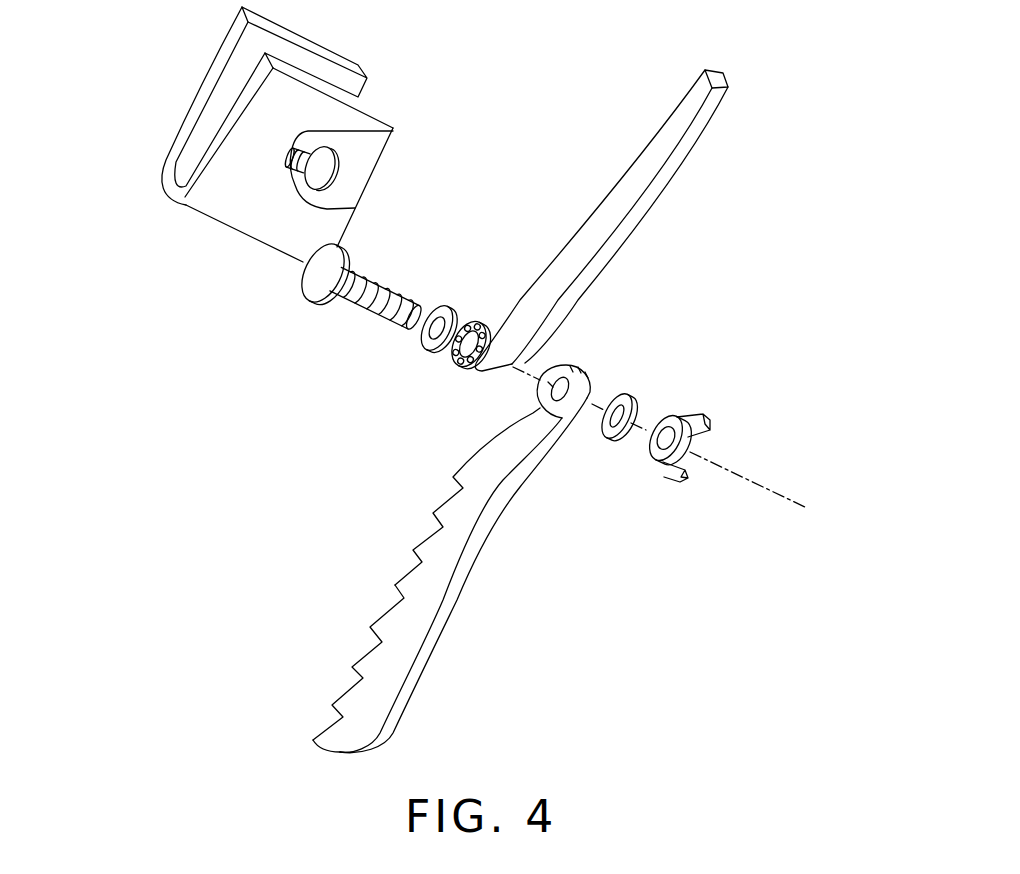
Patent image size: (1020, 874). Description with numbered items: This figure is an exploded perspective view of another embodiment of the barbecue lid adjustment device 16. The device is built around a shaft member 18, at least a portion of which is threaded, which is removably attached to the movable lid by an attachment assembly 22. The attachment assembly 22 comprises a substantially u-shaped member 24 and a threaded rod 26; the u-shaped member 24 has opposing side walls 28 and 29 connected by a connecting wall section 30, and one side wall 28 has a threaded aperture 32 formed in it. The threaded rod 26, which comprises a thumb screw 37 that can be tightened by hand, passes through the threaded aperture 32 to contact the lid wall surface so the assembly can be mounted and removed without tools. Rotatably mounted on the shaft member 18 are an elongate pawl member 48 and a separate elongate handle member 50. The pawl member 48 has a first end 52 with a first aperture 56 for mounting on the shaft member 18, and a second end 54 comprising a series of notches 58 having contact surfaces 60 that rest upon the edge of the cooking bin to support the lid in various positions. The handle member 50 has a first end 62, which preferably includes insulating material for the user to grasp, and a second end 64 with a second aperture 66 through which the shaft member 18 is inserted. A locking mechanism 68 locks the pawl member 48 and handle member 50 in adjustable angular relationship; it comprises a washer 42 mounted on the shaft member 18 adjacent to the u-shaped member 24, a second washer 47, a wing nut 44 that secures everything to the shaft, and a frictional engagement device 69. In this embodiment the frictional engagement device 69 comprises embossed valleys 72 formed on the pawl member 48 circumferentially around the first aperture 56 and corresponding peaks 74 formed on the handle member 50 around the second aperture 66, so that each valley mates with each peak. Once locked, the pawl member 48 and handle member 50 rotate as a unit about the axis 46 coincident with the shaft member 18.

The barbecue lid adjustment device 16 is at (612, 418).
The shaft member 18 is at (367, 307).
The attachment assembly 22 is at (275, 156).
The substantially u-shaped member 24 is at (238, 210).
The threaded rod 26 is at (355, 208).
The opposing side wall 28 is at (392, 120).
The opposing side wall 29 is at (350, 63).
The connecting wall section 30 is at (175, 192).
The threaded aperture 32 is at (393, 131).
The thumb screw 37 is at (325, 168).
The washer 42 is at (443, 305).
The wing nut 44 is at (693, 443).
The axis 46 is at (757, 487).
The washer 47 is at (617, 442).
The elongate pawl member 48 is at (482, 559).
The elongate handle member 50 is at (640, 220).
The first end 52 is at (557, 440).
The second end 54 is at (393, 732).
The first aperture 56 is at (533, 413).
The notches 58 is at (420, 532).
The contact surfaces 60 is at (400, 600).
The first end 62 is at (733, 90).
The second end 64 is at (457, 367).
The second aperture 66 is at (452, 357).
The locking mechanism 68 is at (660, 437).
The frictional engagement device 69 is at (546, 368).
The embossed valleys 72 is at (475, 320).
The peaks 74 is at (578, 372).